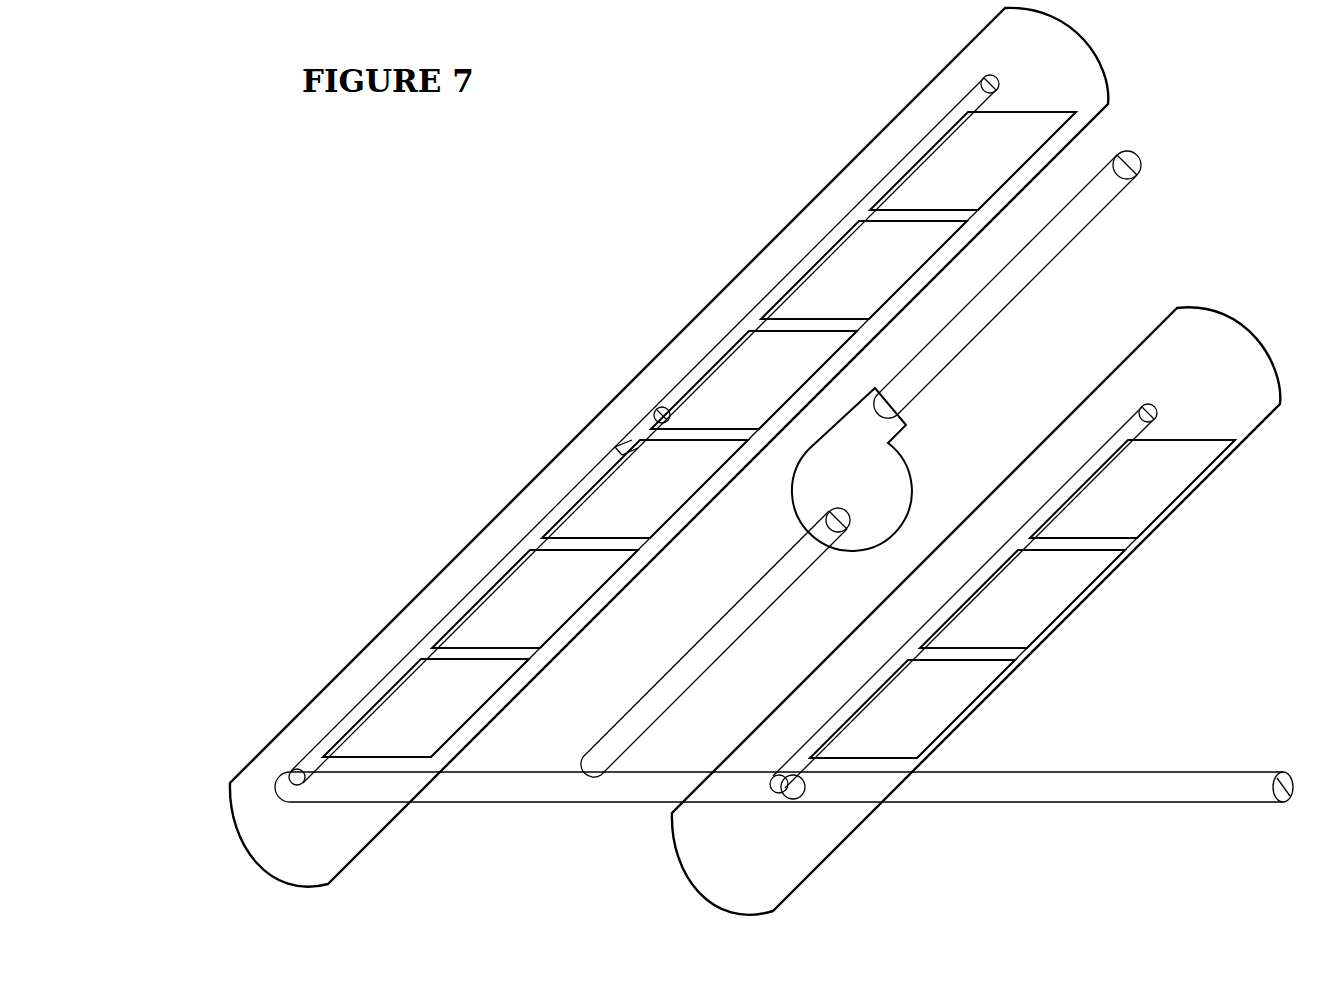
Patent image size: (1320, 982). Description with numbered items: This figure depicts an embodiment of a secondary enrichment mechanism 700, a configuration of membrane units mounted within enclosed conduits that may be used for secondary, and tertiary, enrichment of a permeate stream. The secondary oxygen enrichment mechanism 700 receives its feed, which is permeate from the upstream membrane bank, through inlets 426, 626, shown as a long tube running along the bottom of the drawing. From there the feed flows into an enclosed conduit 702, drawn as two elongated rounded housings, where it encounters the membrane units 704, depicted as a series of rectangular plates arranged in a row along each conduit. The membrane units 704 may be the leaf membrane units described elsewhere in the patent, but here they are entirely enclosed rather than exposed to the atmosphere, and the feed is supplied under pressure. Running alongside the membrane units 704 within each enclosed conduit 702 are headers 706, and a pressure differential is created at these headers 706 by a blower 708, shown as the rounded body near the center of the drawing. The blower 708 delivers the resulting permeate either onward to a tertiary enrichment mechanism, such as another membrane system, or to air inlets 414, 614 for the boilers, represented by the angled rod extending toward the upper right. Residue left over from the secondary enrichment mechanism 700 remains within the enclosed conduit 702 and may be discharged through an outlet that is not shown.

The secondary enrichment mechanism 700 is at (525, 418).
The enclosed conduit 702 is at (321, 677).
The membrane units 704 is at (779, 435).
The headers 706 is at (416, 656).
The blower 708 is at (893, 480).
The air inlet 414 is at (861, 464).
The air inlet 614 is at (861, 464).
The inlet 426 is at (731, 500).
The inlet 626 is at (1175, 117).